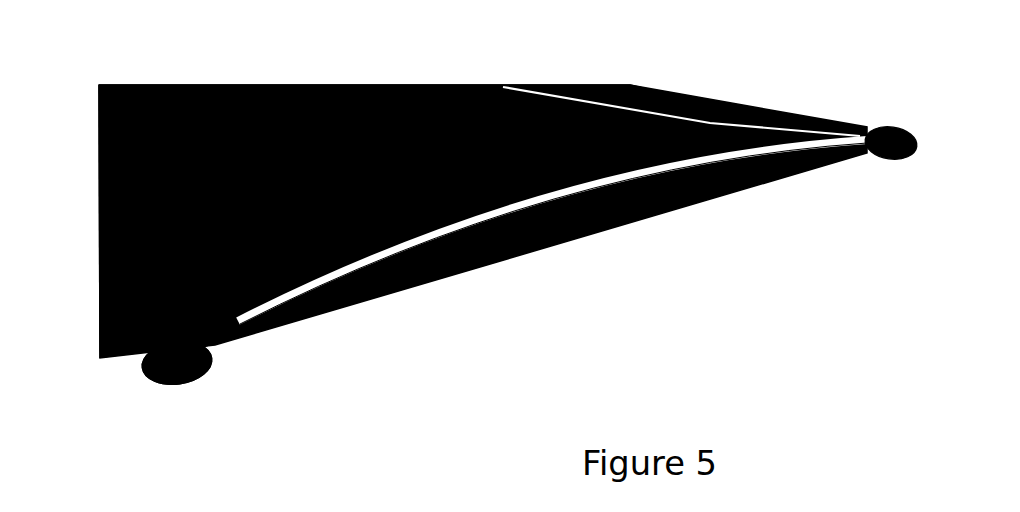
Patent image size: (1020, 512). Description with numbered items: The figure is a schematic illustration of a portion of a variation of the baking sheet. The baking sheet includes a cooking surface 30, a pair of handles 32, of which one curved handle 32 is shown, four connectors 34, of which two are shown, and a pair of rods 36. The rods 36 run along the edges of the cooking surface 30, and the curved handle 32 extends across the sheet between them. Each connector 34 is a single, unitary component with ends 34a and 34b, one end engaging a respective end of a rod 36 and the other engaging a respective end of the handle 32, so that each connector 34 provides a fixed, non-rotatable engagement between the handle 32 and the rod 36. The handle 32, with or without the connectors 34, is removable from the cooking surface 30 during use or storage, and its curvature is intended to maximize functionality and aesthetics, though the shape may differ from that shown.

The cooking surface 30 is at (328, 140).
The handle 32 is at (472, 222).
The connector 34 is at (195, 385).
The connector end 34a is at (147, 377).
The connector end 34b is at (223, 347).
The rod 36 is at (738, 113).